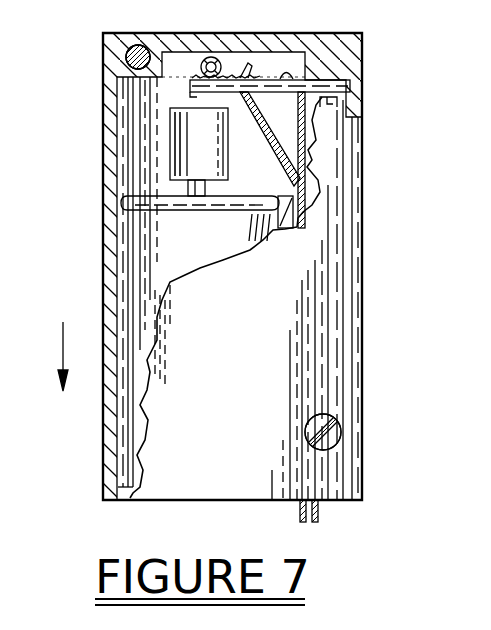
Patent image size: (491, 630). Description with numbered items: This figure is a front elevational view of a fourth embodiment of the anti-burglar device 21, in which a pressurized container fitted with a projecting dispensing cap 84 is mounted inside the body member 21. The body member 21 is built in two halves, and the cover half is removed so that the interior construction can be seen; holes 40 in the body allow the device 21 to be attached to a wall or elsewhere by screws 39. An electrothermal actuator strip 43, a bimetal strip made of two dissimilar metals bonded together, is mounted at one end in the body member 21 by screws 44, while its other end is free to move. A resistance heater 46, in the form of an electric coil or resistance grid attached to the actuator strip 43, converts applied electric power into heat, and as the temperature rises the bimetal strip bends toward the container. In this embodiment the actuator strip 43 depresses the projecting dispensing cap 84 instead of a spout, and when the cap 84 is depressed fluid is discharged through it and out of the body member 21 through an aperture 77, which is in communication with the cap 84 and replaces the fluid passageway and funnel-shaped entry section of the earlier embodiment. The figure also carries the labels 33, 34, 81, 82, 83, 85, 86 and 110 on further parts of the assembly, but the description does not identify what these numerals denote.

The device 21 is at (362, 368).
The electrical lead 33 is at (255, 118).
The electrical lead 34 is at (308, 170).
The screws 39 is at (126, 53).
The holes 40 is at (130, 65).
The electrothermal actuator strip 43 is at (197, 97).
The screws 44 is at (350, 100).
The resistance heater 46 is at (240, 72).
The aperture 77 is at (118, 165).
The fluid 81 is at (330, 318).
The fluid 82 is at (162, 263).
The flexible wall 83 is at (146, 161).
The projecting dispensing cap 84 is at (205, 149).
The motor mount 85 is at (166, 124).
The direction of flow 86 is at (65, 342).
The arm 110 is at (123, 202).